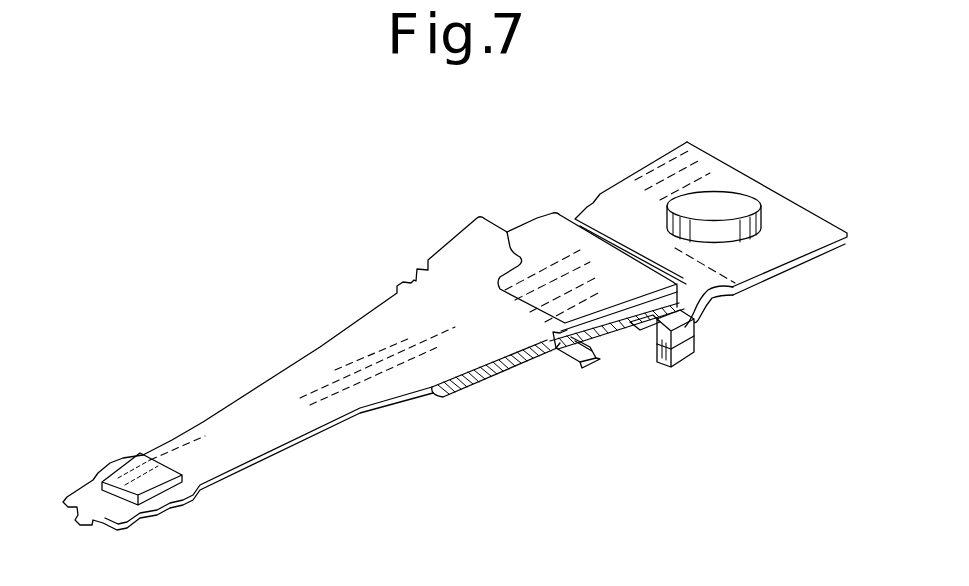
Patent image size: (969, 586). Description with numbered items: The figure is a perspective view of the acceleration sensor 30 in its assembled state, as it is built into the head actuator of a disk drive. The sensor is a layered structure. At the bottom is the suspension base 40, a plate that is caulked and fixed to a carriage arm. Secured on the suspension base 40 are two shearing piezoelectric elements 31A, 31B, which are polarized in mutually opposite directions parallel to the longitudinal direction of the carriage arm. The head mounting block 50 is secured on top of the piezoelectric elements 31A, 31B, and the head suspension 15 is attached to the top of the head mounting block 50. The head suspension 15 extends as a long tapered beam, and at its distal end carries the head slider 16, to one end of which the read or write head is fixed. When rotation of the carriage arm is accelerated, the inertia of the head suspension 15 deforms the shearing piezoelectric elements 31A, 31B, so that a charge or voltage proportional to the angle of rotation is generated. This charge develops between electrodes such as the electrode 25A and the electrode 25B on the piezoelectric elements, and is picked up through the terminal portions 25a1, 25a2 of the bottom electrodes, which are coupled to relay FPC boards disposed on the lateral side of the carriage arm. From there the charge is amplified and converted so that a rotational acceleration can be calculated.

The head suspension 15 is at (296, 423).
The head slider 16 is at (157, 473).
The head mounting block 50 is at (537, 238).
The suspension base 40 is at (800, 220).
The terminal portion 25a1 is at (690, 337).
The terminal portion 25a2 is at (668, 352).
The electrode 25B is at (623, 340).
The electrode 25A is at (580, 352).
The shearing piezoelectric element 31A is at (603, 350).
The shearing piezoelectric element 31B is at (578, 430).
The acceleration sensor 30 is at (698, 440).